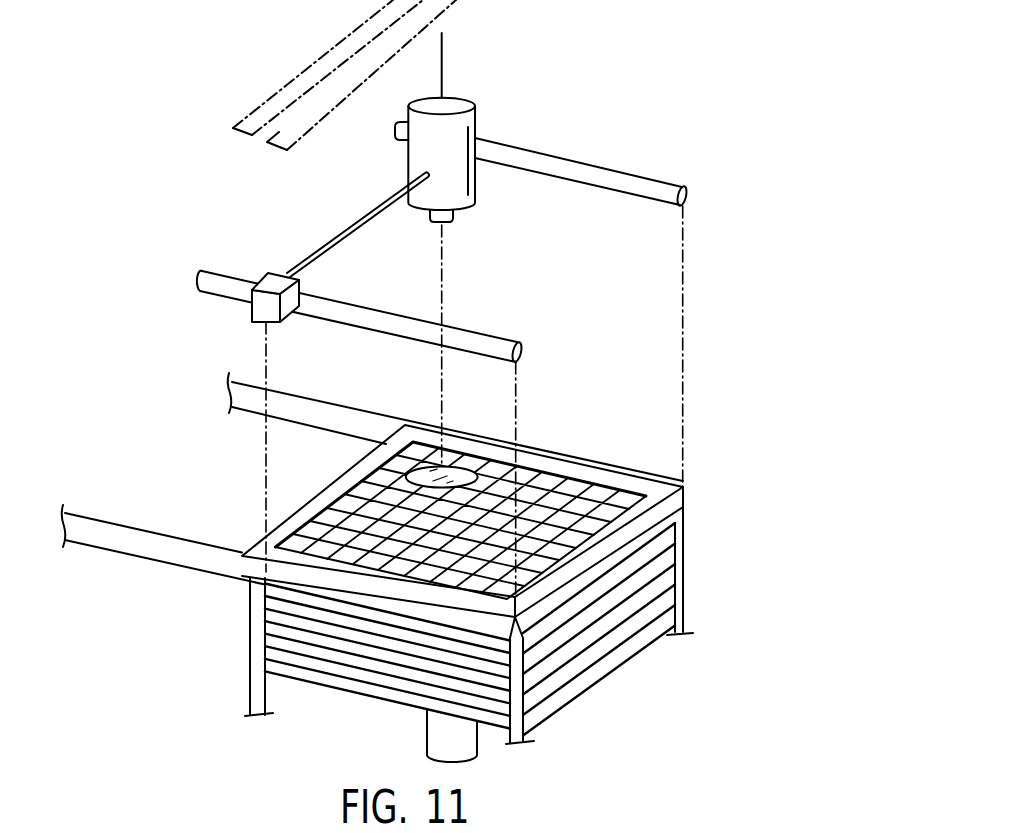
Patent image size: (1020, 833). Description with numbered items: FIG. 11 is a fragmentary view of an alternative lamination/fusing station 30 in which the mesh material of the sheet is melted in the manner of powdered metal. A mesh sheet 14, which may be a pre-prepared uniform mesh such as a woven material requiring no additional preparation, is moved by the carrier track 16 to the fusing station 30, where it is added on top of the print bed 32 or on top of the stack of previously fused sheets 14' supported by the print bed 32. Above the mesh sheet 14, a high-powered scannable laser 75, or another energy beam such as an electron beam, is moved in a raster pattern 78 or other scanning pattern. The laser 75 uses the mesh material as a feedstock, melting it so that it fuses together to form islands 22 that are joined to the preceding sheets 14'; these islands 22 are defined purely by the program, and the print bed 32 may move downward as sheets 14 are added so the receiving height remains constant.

The sheet 14 is at (462, 504).
The previously fused sheets 14' is at (624, 629).
The carrier track 16 is at (248, 407).
The islands 22 is at (455, 469).
The lamination/fusing station 30 is at (727, 190).
The print bed 32 is at (600, 670).
The scannable laser 75 is at (468, 118).
The raster pattern 78 is at (327, 52).